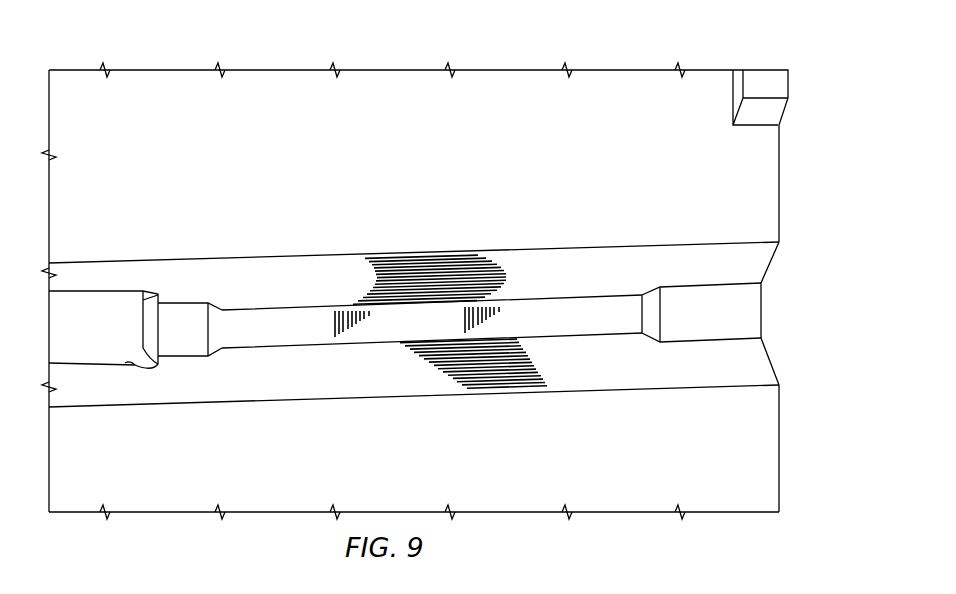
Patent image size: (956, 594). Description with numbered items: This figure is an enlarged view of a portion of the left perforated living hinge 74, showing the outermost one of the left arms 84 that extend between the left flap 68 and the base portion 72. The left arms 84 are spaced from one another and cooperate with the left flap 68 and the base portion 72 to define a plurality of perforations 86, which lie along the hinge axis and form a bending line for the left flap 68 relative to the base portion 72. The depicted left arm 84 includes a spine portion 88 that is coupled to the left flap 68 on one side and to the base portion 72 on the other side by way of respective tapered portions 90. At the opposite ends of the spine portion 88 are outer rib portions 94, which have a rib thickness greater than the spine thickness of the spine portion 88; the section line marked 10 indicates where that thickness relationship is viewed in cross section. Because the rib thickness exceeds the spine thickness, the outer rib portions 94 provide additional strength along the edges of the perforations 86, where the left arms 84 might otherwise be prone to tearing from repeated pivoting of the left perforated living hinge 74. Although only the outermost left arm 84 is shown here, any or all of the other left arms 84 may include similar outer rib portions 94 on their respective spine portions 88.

The section line for FIG. 10 is at (492, 172).
The left flap 68 is at (627, 78).
The base portion 72 is at (620, 500).
The left perforated living hinge 74 is at (783, 308).
The left arms 84 is at (340, 367).
The perforations 86 is at (88, 338).
The spine portion 88 is at (588, 305).
The tapered portions 90 is at (355, 270).
The outer rib portions 94 is at (188, 348).